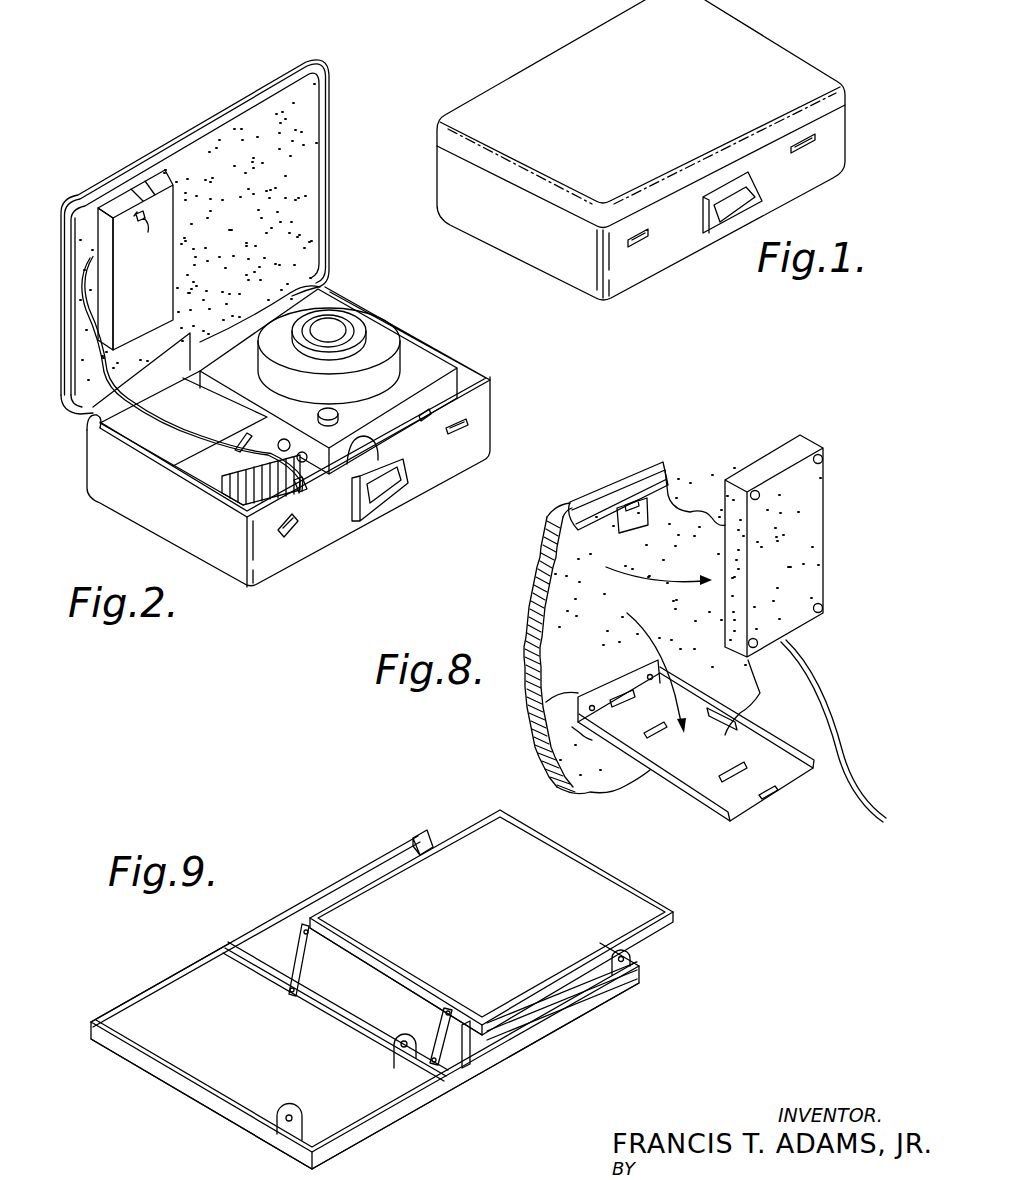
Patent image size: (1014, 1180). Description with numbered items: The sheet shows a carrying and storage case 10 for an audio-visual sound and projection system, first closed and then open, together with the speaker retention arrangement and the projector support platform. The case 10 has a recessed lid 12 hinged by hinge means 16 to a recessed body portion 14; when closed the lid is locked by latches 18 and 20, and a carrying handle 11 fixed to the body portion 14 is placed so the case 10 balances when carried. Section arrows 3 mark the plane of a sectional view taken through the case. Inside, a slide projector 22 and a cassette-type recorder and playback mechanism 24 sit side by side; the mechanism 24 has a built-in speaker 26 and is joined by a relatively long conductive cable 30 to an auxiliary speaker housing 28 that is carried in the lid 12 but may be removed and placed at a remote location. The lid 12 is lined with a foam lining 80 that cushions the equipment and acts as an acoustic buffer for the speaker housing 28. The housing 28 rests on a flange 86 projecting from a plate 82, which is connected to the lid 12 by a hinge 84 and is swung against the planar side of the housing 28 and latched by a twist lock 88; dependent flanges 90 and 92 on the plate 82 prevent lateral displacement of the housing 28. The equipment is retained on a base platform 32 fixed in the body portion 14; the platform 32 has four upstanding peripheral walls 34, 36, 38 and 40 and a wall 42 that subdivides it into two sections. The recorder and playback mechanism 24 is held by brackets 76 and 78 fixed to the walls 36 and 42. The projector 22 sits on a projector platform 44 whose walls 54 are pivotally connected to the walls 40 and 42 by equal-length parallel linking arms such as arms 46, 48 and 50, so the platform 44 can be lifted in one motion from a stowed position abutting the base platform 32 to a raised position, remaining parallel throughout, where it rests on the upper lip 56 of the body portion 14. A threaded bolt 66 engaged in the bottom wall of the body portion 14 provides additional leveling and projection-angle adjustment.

In FIG. 2, the section line 3- 3 is at (87, 173).
In FIG. 1, the carrying case 10 is at (663, 156).
In FIG. 1, the carrying handle 11 is at (763, 193).
In FIG. 2, the carrying handle 11 is at (410, 480).
In FIG. 1, the recessed lid 12 is at (556, 54).
In FIG. 2, the recessed lid 12 is at (274, 84).
In FIG. 1, the recessed body portion 14 is at (647, 272).
In FIG. 2, the recessed body portion 14 is at (293, 553).
In FIG. 2, the hinge means 16 is at (339, 366).
In FIG. 1, the latch 18 is at (650, 238).
In FIG. 2, the latch 18 is at (293, 527).
In FIG. 1, the latch 20 is at (816, 142).
In FIG. 2, the latch 20 is at (470, 427).
In FIG. 2, the slide projector 22 is at (417, 372).
In FIG. 2, the cassette-type recorder and playback mechanism 24 is at (207, 467).
In FIG. 2, the speaker 26 is at (147, 437).
In FIG. 2, the auxiliary speaker housing 28 is at (86, 210).
In FIG. 8, the auxiliary speaker housing 28 is at (813, 534).
In FIG. 2, the conductive cable 30 is at (203, 432).
In FIG. 8, the conductive cable 30 is at (838, 722).
In FIG. 9, the base platform 32 is at (270, 1066).
In FIG. 9, the upstanding wall 34 is at (388, 1115).
In FIG. 9, the upstanding wall 36 is at (212, 1106).
In FIG. 9, the upstanding wall 38 is at (187, 977).
In FIG. 9, the upstanding wall 40 is at (428, 836).
In FIG. 9, the subdividing wall 42 is at (374, 1036).
In FIG. 9, the projector platform 44 is at (491, 922).
In FIG. 9, the linking arm 46 is at (438, 1016).
In FIG. 9, the linking arm 48 is at (307, 964).
In FIG. 9, the linking arm 50 is at (635, 952).
In FIG. 9, the walls of the projector platform 54 is at (392, 970).
In FIG. 2, the upper lip 56 is at (426, 432).
In FIG. 9, the threaded bolt 66 is at (477, 1047).
In FIG. 9, the bracket 76 is at (300, 1106).
In FIG. 9, the bracket 78 is at (392, 1051).
In FIG. 2, the foam lining 80 is at (285, 221).
In FIG. 8, the foam lining 80 is at (597, 641).
In FIG. 2, the plate 82 is at (123, 273).
In FIG. 8, the plate 82 is at (701, 728).
In FIG. 8, the hinge 84 is at (528, 712).
In FIG. 8, the flange 86 is at (637, 680).
In FIG. 2, the twist lock 88 is at (151, 238).
In FIG. 8, the twist lock 88 is at (647, 520).
In FIG. 8, the dependent flange 90 is at (688, 790).
In FIG. 8, the dependent flange 92 is at (769, 740).